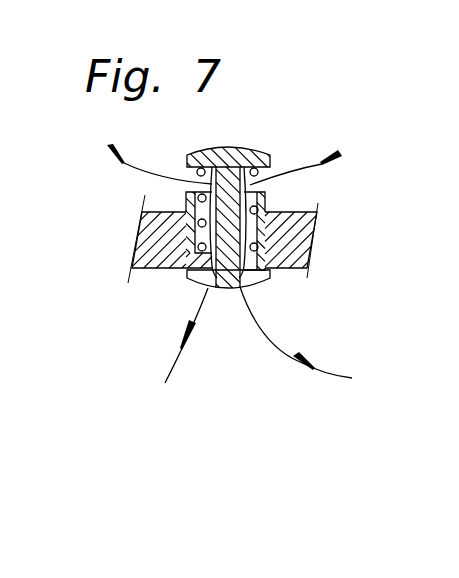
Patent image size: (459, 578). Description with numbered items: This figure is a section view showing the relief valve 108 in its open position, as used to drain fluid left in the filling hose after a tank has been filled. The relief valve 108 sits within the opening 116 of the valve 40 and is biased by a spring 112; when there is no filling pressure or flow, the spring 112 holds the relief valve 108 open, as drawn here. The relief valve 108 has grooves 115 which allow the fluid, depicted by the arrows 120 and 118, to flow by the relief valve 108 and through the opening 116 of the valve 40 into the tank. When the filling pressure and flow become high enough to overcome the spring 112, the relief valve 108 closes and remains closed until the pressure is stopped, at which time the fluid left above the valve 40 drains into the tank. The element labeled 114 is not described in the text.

The valve 40 is at (290, 270).
The relief valve 108 is at (232, 147).
The spring 112 is at (268, 157).
The seal gap 114 is at (250, 181).
The grooves 115 is at (207, 285).
The opening 116 is at (210, 265).
The arrows 118 is at (283, 352).
The arrows 120 is at (138, 170).